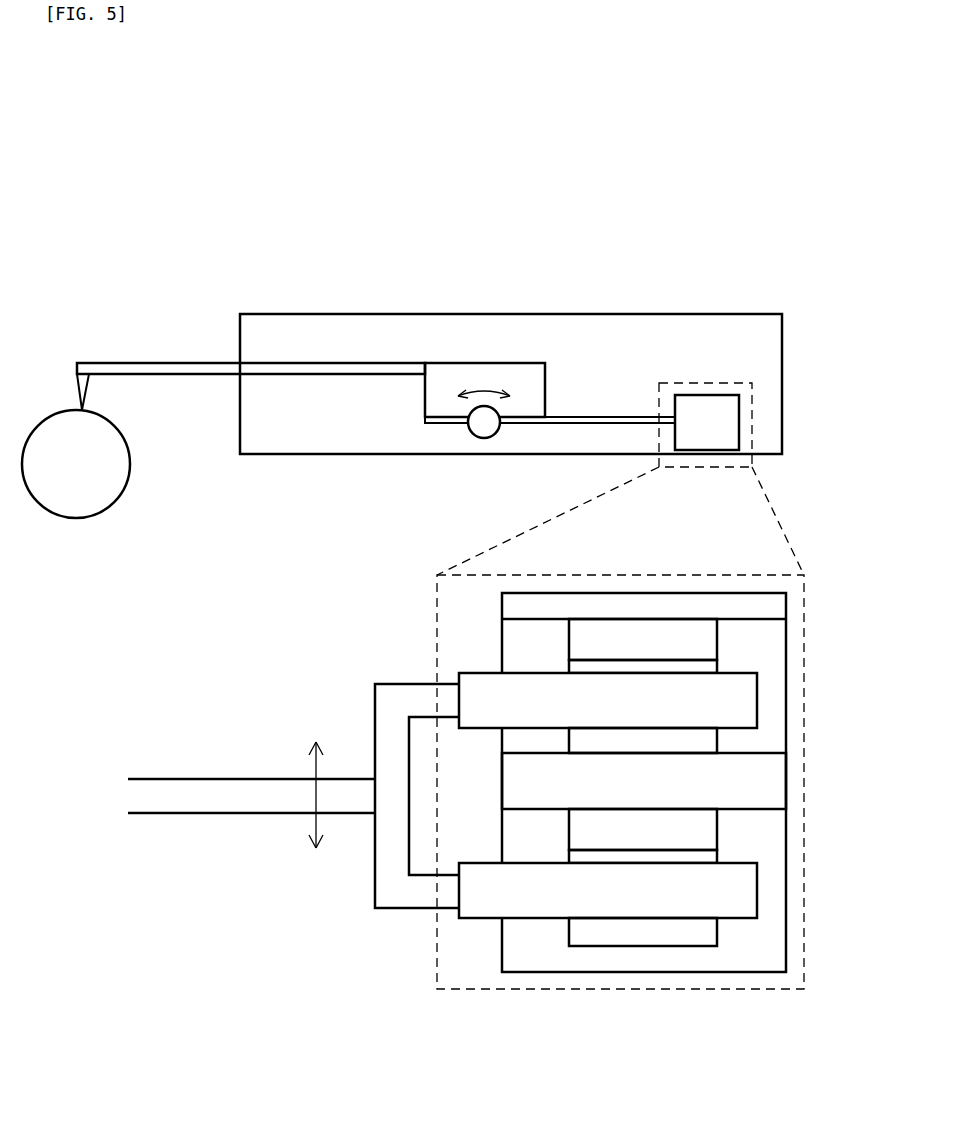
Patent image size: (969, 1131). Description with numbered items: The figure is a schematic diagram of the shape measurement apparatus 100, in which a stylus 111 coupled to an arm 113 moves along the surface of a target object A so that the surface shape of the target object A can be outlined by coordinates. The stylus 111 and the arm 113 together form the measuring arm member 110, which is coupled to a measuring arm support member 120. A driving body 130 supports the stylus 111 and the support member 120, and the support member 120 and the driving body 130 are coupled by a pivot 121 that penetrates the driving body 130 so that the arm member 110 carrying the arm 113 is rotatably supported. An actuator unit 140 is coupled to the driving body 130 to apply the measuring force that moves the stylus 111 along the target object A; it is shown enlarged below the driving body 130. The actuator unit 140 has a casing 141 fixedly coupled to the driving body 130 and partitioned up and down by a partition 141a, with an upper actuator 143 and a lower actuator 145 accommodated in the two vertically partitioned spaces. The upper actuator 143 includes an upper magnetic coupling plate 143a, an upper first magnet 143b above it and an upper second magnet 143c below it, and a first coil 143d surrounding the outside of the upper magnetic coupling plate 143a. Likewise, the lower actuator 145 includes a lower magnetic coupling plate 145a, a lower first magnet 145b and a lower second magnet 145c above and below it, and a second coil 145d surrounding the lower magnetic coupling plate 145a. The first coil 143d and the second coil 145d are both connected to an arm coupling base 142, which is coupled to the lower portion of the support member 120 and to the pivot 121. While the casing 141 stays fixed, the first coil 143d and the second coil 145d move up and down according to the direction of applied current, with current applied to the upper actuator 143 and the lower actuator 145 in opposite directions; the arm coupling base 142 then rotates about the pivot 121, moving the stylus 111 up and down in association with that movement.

The shape measurement apparatus 100 is at (120, 188).
The measuring arm member 110 is at (222, 315).
The stylus 111 is at (77, 391).
The arm 113 is at (150, 364).
The target object A is at (77, 520).
The measuring arm support member 120 is at (501, 362).
The pivot 121 is at (480, 432).
The driving body 130 is at (634, 313).
The actuator unit 140 is at (706, 394).
The casing 141 is at (615, 773).
The partition 141a is at (765, 780).
The arm coupling base 142 is at (235, 777).
The upper actuator 143 is at (613, 652).
The upper magnetic coupling plate 143a is at (575, 666).
The upper first magnet 143b is at (707, 638).
The upper second magnet 143c is at (707, 743).
The first coil 143d is at (745, 702).
The lower actuator 145 is at (593, 913).
The lower magnetic coupling plate 145a is at (707, 857).
The lower first magnet 145b is at (707, 823).
The lower second magnet 145c is at (707, 933).
The second coil 145d is at (745, 890).